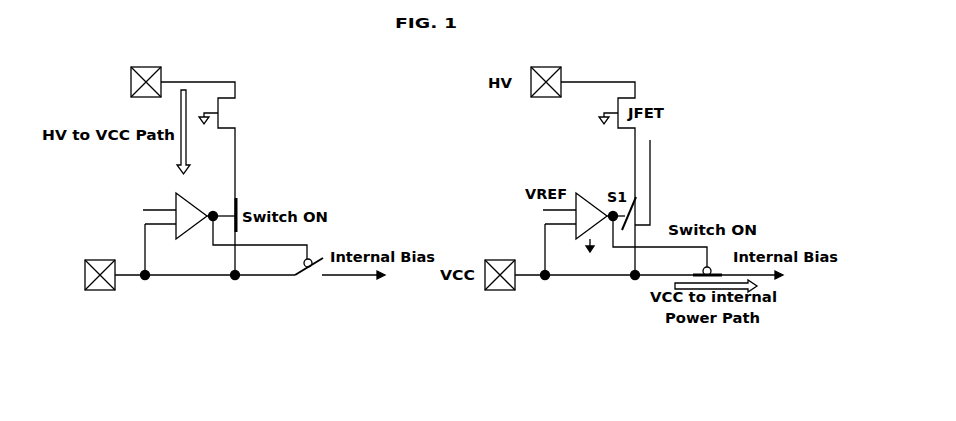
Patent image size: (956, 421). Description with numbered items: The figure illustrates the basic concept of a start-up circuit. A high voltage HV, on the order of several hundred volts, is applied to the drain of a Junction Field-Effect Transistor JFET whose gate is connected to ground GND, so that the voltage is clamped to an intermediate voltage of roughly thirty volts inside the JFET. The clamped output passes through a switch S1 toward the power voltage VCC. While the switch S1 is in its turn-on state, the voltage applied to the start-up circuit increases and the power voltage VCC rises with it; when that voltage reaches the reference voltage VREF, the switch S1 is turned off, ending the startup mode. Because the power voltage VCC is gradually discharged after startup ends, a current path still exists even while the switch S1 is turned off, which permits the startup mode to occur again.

The high voltage HV is at (124, 82).
The Junction Field-Effect Transistor JFET is at (212, 178).
The reference voltage VREF is at (166, 230).
The switch S1 is at (265, 232).
The power voltage VCC is at (167, 275).
The ground GND is at (591, 253).